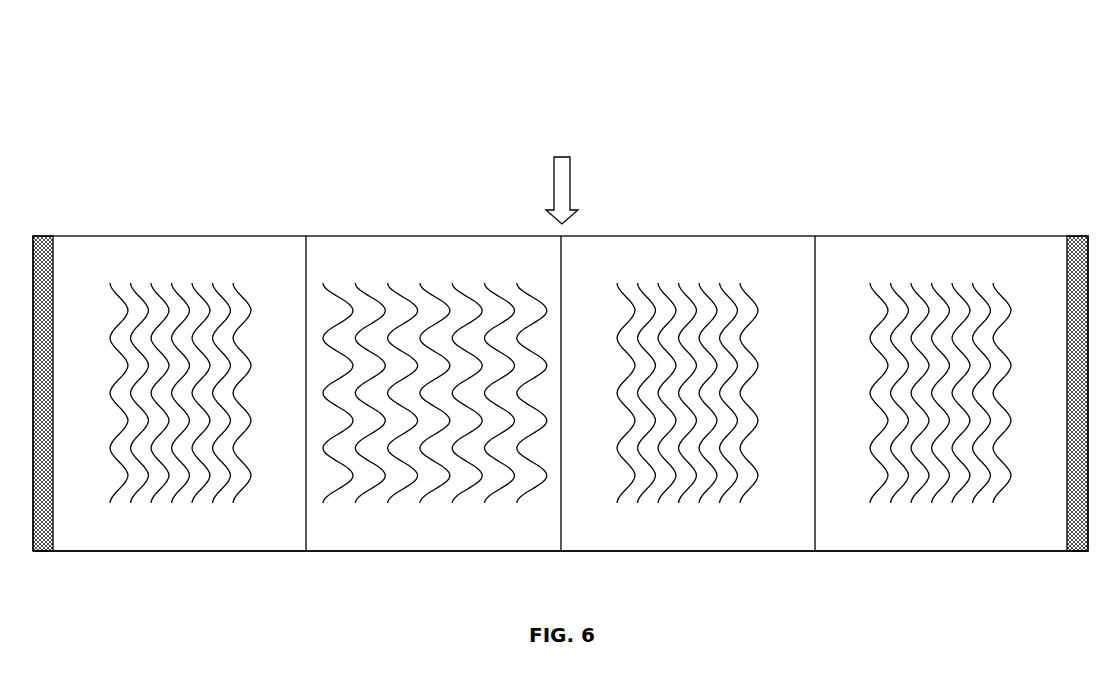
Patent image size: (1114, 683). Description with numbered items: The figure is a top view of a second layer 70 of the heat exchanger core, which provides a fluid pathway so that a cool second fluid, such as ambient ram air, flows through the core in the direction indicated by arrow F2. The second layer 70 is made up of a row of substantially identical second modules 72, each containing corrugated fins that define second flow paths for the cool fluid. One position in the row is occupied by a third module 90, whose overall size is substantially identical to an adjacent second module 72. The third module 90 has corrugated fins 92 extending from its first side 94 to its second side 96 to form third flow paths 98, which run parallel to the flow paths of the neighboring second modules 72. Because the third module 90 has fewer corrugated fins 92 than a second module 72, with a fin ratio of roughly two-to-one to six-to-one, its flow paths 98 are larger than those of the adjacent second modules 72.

The second layer 70 is at (160, 104).
The second module 72 is at (166, 226).
The third module 90 is at (435, 404).
The corrugated fins 92 is at (462, 500).
The first side 94 is at (350, 236).
The second side 96 is at (350, 552).
The third flow paths 98 is at (508, 478).
The arrow F2 is at (553, 183).